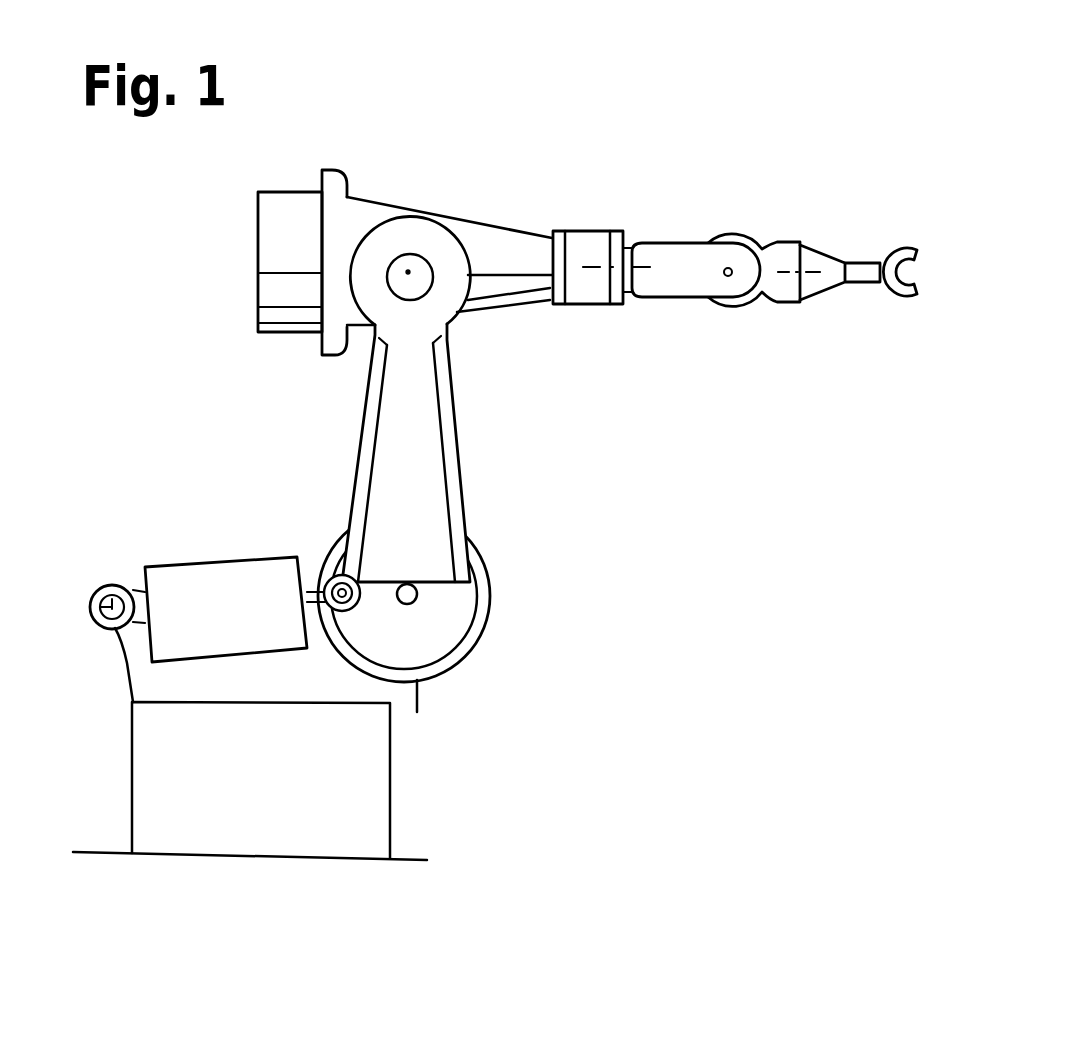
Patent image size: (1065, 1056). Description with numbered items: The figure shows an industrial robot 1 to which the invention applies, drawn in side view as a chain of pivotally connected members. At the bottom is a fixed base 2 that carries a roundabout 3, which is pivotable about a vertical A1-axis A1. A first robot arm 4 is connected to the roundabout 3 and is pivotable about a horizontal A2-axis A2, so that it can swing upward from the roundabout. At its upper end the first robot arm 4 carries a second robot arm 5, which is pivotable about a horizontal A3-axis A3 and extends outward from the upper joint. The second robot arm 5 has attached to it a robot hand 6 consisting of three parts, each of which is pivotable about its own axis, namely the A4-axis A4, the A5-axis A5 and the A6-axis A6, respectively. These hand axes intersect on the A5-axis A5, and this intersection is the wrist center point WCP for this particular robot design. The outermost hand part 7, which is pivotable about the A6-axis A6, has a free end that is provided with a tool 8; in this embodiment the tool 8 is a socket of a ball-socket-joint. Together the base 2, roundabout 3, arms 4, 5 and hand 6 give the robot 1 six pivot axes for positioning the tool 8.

The industrial robot 1 is at (633, 436).
The fixed base 2 is at (372, 783).
The roundabout 3 is at (393, 698).
The first robot arm 4 is at (437, 503).
The second robot arm 5 is at (510, 247).
The robot hand 6 is at (744, 343).
The hand part 7 is at (833, 280).
The tool 8 is at (277, 238).
The A1-axis A1 is at (260, 822).
The A2-axis A2 is at (407, 604).
The A3-axis A3 is at (405, 272).
The A4-axis A4 is at (596, 265).
The A5-axis A5 is at (720, 252).
The A6-axis A6 is at (790, 278).
The wrist center point WCP is at (727, 268).